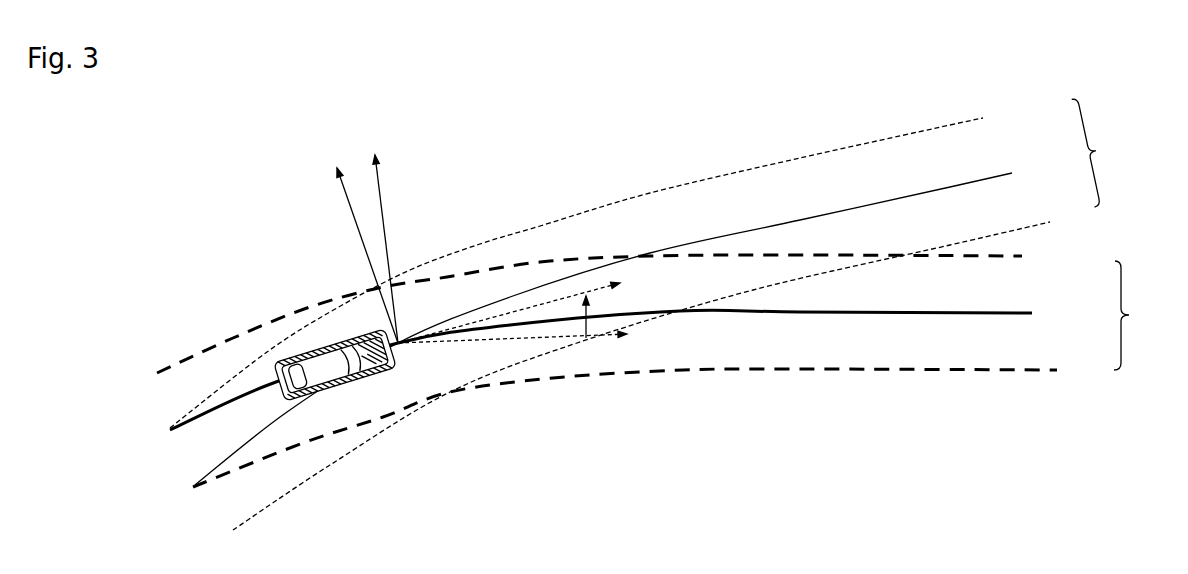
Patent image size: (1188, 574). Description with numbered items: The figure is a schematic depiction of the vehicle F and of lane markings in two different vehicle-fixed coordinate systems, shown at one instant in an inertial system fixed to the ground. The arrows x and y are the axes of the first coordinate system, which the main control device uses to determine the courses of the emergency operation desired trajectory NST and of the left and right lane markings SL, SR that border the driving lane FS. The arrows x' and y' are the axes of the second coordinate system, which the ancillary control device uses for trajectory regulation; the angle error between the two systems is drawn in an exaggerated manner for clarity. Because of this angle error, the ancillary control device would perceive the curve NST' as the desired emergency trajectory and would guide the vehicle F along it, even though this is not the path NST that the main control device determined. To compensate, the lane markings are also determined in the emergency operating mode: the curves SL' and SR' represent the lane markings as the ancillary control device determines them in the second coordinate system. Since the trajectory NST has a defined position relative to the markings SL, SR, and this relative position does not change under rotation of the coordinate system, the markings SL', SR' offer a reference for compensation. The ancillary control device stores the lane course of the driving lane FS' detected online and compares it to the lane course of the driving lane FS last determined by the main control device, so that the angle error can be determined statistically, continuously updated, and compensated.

The left lane marking in the second coordinate system SL' is at (591, 266).
The curve of the emergency operation desired trajectory in the second coordinate sys NST' is at (628, 316).
The right lane marking in the second coordinate system SR' is at (657, 369).
The driving lane detected online in the second coordinate system FS' is at (1102, 152).
The left lane marking SL is at (601, 310).
The emergency operation desired trajectory NST is at (625, 368).
The right lane marking SR is at (644, 425).
The driving lane FS is at (1136, 315).
The vehicle F is at (335, 365).
The y coordinate axis of the first coordinate system y is at (379, 236).
The y' coordinate axis of the second coordinate system y' is at (357, 241).
The x coordinate axis of the first coordinate system x is at (524, 339).
The x' coordinate axis of the second coordinate system x' is at (522, 308).